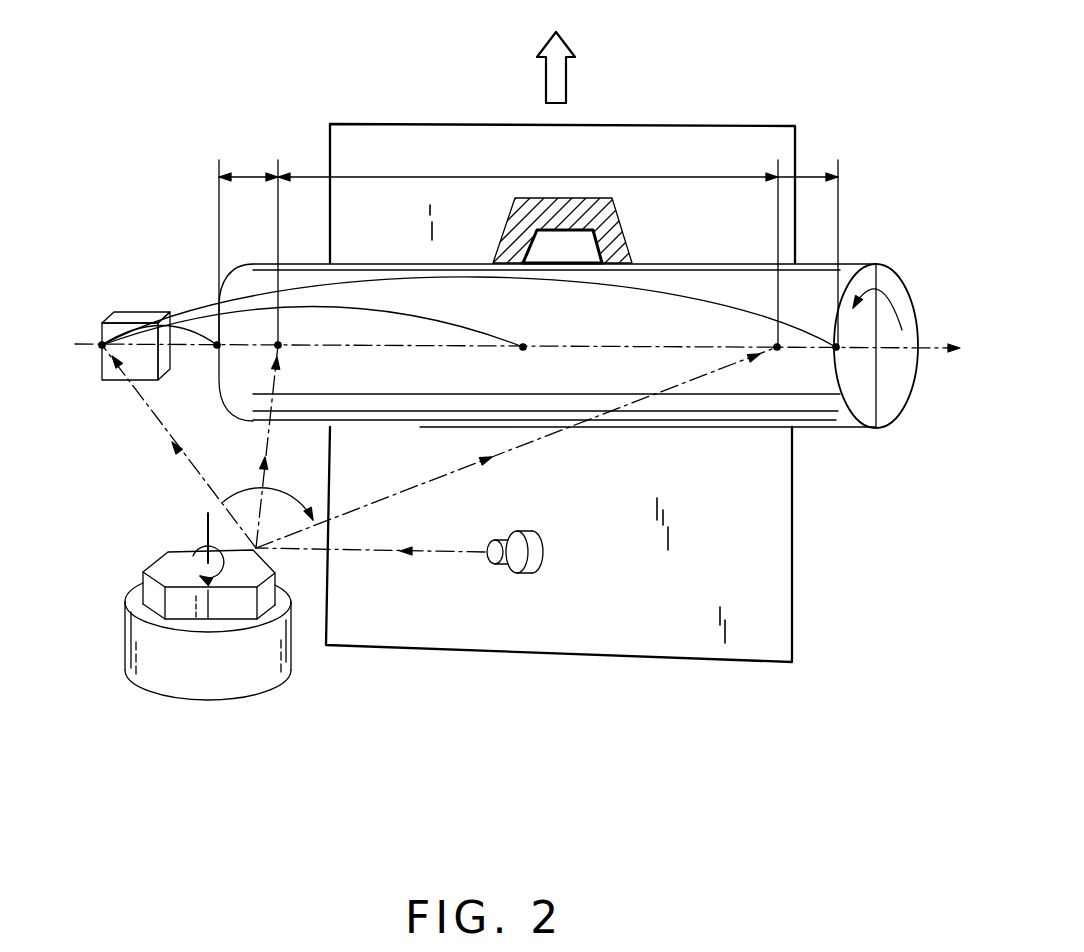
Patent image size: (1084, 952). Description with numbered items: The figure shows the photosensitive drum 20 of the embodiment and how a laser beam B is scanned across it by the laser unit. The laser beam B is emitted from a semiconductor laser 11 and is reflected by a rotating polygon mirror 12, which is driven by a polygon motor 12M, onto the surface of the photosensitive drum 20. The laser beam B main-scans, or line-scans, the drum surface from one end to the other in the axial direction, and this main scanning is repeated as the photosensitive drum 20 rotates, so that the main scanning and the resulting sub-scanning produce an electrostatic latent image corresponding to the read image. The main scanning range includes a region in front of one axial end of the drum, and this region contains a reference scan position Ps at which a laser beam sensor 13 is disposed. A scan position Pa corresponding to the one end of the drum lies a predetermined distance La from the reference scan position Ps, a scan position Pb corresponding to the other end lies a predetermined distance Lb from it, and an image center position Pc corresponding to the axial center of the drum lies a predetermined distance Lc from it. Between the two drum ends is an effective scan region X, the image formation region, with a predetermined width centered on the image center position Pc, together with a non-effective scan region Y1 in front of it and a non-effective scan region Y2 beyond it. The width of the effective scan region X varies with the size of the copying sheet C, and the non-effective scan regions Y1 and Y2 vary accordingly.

The semiconductor laser 11 is at (531, 574).
The polygon mirror 12 is at (158, 556).
The polygon motor 12M is at (287, 680).
The laser beam sensor 13 is at (138, 312).
The photosensitive drum 20 is at (895, 272).
The copying sheet C is at (747, 125).
The effective scan region X is at (528, 249).
The non-effective scan region Y1 is at (245, 172).
The non-effective scan region Y2 is at (806, 172).
The laser beam B is at (156, 453).
The reference scan position Ps is at (98, 352).
The scan position Pa is at (213, 352).
The scan position Pb is at (832, 352).
The image center position Pc is at (525, 345).
The predetermined distance La is at (159, 333).
The predetermined distance Lb is at (469, 310).
The predetermined distance Lc is at (312, 321).